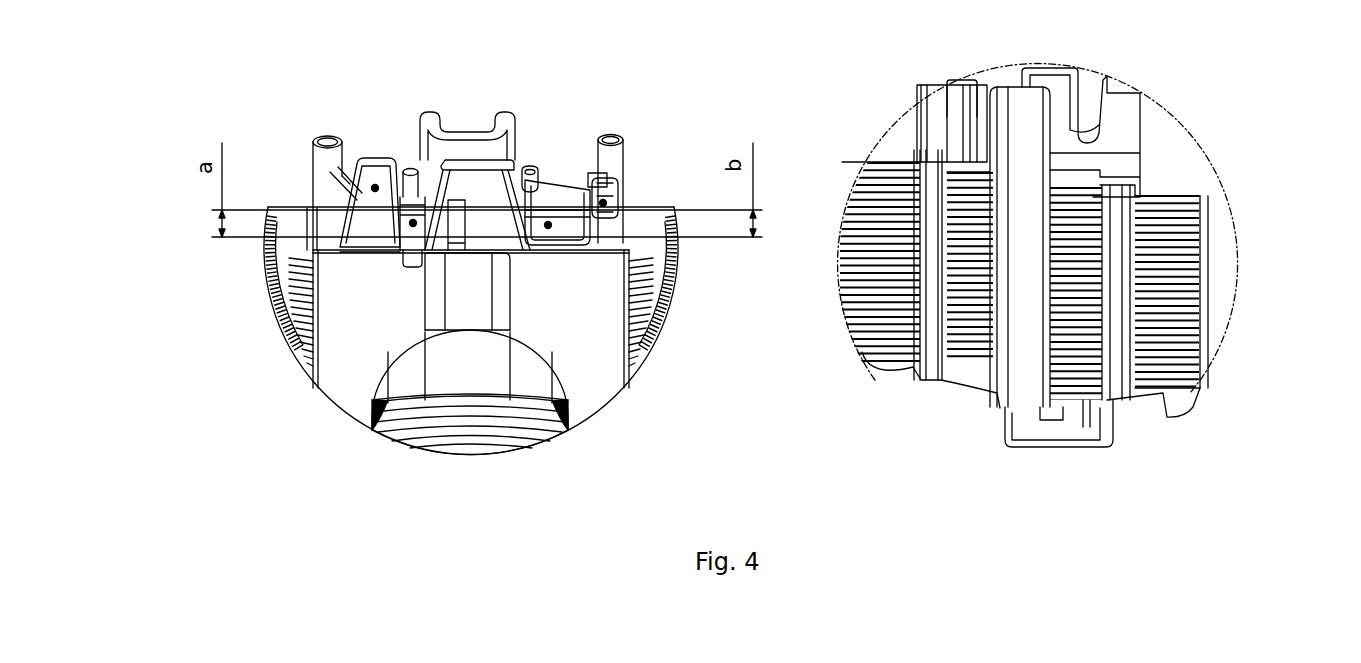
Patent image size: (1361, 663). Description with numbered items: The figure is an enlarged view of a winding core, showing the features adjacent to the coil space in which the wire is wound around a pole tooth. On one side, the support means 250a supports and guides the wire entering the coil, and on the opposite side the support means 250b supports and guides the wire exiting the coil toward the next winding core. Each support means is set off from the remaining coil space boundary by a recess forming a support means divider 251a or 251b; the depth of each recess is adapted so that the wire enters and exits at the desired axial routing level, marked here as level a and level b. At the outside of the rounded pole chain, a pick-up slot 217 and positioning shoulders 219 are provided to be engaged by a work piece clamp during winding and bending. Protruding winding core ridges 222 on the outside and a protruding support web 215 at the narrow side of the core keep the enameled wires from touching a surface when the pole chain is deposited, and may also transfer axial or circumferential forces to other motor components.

The support means 250a is at (374, 184).
The support means divider 251a is at (411, 168).
The positioning shoulder 219 is at (529, 170).
The support means divider 251b is at (552, 220).
The support means 250b is at (613, 192).
The pick-up slot 217 is at (1027, 137).
The winding core ridge 222 is at (1123, 390).
The support web 215 is at (1042, 433).